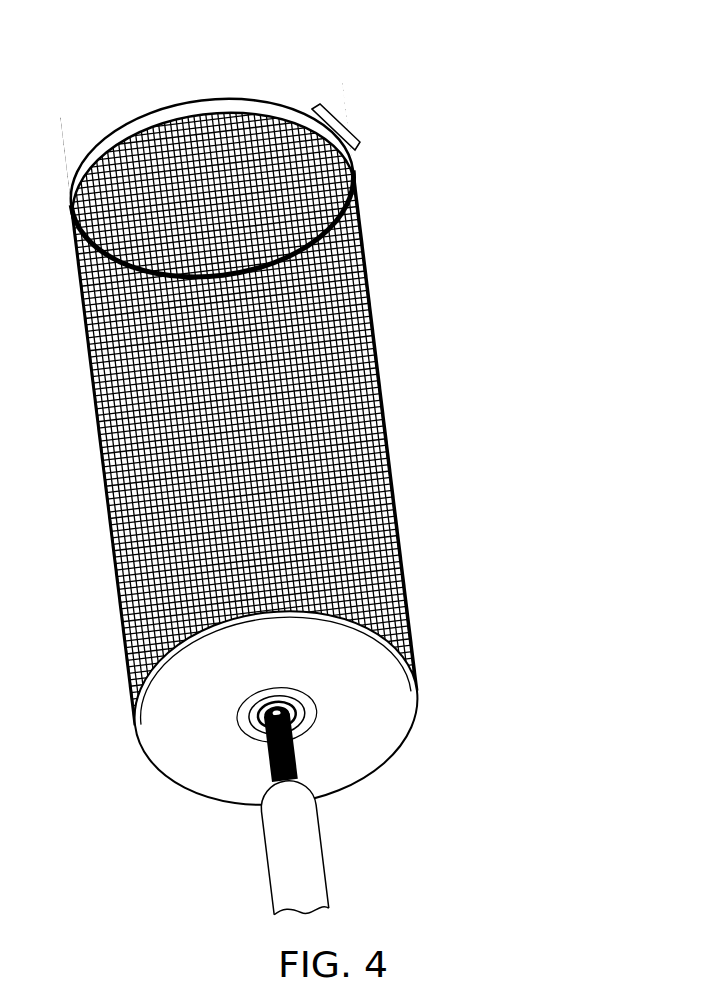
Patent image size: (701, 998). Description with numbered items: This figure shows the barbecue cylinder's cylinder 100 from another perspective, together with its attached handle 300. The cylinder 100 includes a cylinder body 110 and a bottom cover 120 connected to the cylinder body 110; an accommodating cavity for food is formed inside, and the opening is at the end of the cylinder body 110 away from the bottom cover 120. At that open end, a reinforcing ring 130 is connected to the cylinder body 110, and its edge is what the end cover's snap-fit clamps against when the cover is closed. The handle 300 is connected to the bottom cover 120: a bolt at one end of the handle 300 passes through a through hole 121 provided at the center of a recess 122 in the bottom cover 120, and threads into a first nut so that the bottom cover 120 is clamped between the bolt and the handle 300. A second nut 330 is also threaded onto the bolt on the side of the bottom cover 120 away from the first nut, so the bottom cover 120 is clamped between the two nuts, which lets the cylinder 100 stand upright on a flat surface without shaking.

The cylinder 100 is at (363, 422).
The cylinder body 110 is at (372, 457).
The bottom cover 120 is at (337, 685).
The reinforcing ring 130 is at (230, 100).
The through hole 121 is at (300, 714).
The recess 122 is at (247, 700).
The handle 300 is at (256, 838).
The second nut 330 is at (253, 712).